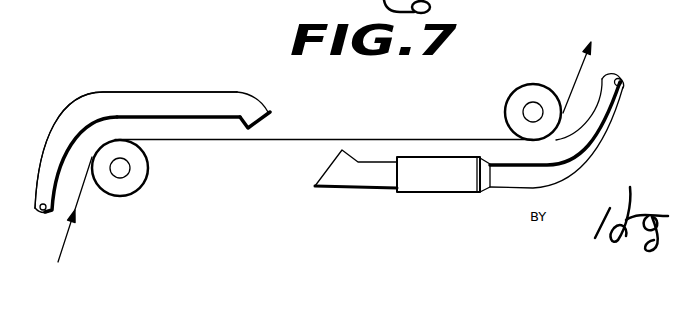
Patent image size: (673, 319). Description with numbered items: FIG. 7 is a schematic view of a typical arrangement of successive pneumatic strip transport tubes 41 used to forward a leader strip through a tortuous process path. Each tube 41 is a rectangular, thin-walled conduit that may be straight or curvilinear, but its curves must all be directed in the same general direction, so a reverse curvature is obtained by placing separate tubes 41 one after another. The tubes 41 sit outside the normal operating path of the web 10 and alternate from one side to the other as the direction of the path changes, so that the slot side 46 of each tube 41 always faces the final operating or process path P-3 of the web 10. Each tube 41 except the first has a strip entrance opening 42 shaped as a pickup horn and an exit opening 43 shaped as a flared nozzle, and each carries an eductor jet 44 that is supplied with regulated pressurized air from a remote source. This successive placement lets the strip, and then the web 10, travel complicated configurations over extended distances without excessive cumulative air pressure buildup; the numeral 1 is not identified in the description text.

The conveyor belt 1 is at (178, 100).
The pneumatic strip transport tube 41 is at (88, 108).
The exit opening 43 is at (258, 112).
The slot side 46 is at (177, 120).
The process path P-3 is at (335, 138).
The web 10 is at (425, 137).
The strip entrance opening 42 is at (323, 171).
The eductor jet 44 is at (432, 178).